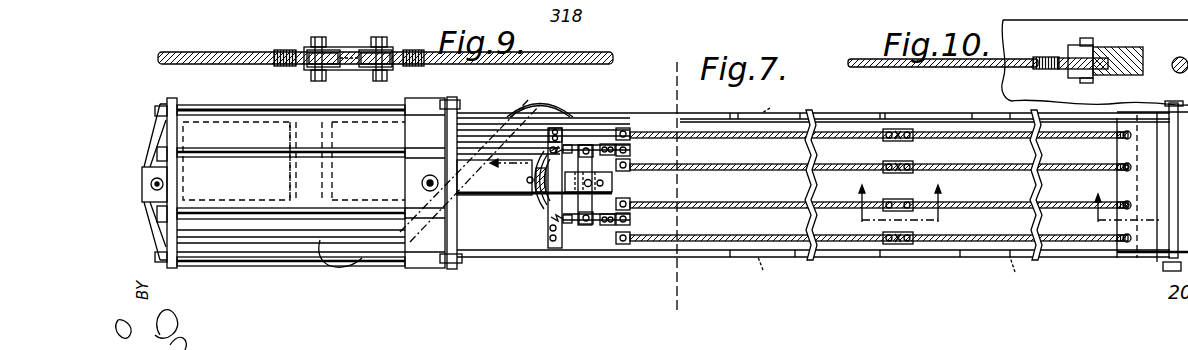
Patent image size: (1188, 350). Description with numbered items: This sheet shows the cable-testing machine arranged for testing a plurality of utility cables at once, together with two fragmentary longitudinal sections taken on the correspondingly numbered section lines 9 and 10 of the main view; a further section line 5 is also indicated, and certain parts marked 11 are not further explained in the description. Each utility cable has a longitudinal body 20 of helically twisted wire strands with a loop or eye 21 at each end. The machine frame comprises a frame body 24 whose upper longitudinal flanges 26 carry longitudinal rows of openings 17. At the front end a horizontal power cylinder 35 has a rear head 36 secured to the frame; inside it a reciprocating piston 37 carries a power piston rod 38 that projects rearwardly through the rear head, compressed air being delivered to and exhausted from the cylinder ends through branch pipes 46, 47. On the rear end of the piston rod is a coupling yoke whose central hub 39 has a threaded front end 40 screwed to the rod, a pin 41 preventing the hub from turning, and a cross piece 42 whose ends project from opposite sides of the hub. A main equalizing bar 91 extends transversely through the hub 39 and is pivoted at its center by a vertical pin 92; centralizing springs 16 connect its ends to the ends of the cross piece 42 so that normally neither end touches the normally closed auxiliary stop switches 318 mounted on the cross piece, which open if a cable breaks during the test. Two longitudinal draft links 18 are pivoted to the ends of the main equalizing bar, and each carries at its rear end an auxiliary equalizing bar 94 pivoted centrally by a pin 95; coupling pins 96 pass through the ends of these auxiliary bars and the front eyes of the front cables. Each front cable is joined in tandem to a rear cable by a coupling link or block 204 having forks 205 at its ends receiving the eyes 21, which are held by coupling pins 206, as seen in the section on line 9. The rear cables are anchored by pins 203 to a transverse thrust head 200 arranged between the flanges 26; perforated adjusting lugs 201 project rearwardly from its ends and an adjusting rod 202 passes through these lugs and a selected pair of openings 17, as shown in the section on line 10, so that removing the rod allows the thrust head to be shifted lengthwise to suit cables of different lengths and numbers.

In FIG. 7, the section line 5- 5 is at (673, 186).
In FIG. 7, the section line 9 is at (899, 208).
In FIG. 7, the section line 10 is at (1118, 212).
In FIG. 7, the frame bars 11 is at (588, 144).
In FIG. 7, the centralizing springs 16 is at (563, 149).
In FIG. 7, the openings 17 is at (888, 190).
In FIG. 7, the draft links 18 is at (607, 144).
In FIG. 9, the utility cable body 20 is at (160, 57).
In FIG. 10, the utility cable body 20 is at (943, 73).
In FIG. 7, the utility cable body 20 is at (780, 138).
In FIG. 9, the loop 21 is at (296, 52).
In FIG. 10, the loop 21 is at (1066, 68).
In FIG. 7, the loop 21 is at (1122, 138).
In FIG. 7, the frame member 24 is at (920, 198).
In FIG. 7, the upper flanges 26 is at (830, 113).
In FIG. 7, the power cylinder 35 is at (291, 186).
In FIG. 7, the rear head 36 is at (452, 268).
In FIG. 7, the piston 37 is at (296, 185).
In FIG. 7, the power piston rod 38 is at (478, 196).
In FIG. 7, the hub 39 is at (612, 178).
In FIG. 7, the threaded front end 40 is at (545, 205).
In FIG. 7, the pin 41 is at (527, 181).
In FIG. 7, the cross piece 42 is at (551, 248).
In FIG. 7, the branch pipe 46 is at (151, 184).
In FIG. 7, the branch pipe 47 is at (422, 184).
In FIG. 7, the main equalizing bar 91 is at (583, 226).
In FIG. 7, the vertical pin 92 is at (603, 185).
In FIG. 7, the auxiliary equalizing bars 94 is at (626, 128).
In FIG. 7, the pin 95 is at (630, 150).
In FIG. 7, the coupling pins 96 is at (630, 219).
In FIG. 10, the thrust head 200 is at (1143, 50).
In FIG. 7, the thrust head 200 is at (1145, 250).
In FIG. 10, the adjusting lugs 201 is at (1133, 46).
In FIG. 7, the adjusting lugs 201 is at (1155, 108).
In FIG. 10, the adjusting rod 202 is at (1173, 74).
In FIG. 10, the pin 203 is at (1080, 45).
In FIG. 7, the pin 203 is at (1124, 202).
In FIG. 9, the coupling link 204 is at (348, 47).
In FIG. 7, the coupling link 204 is at (898, 141).
In FIG. 9, the forks 205 is at (308, 68).
In FIG. 9, the coupling pins 206 is at (318, 37).
In FIG. 7, the coupling pins 206 is at (905, 187).
In FIG. 7, the auxiliary stop switches 318 is at (549, 136).